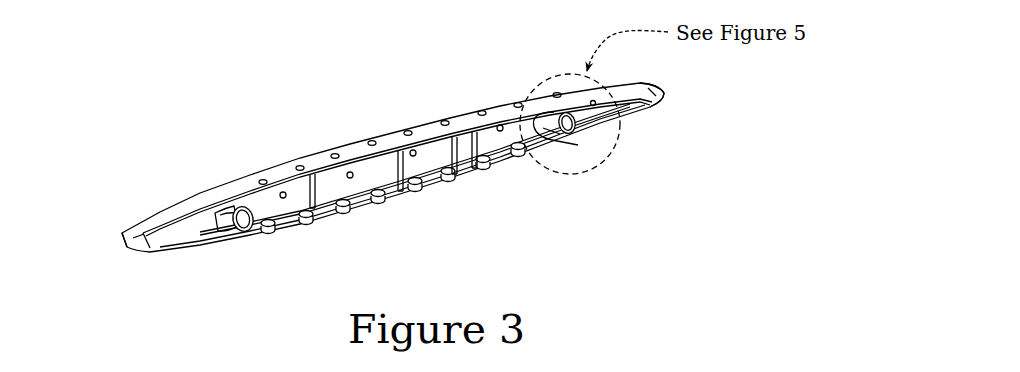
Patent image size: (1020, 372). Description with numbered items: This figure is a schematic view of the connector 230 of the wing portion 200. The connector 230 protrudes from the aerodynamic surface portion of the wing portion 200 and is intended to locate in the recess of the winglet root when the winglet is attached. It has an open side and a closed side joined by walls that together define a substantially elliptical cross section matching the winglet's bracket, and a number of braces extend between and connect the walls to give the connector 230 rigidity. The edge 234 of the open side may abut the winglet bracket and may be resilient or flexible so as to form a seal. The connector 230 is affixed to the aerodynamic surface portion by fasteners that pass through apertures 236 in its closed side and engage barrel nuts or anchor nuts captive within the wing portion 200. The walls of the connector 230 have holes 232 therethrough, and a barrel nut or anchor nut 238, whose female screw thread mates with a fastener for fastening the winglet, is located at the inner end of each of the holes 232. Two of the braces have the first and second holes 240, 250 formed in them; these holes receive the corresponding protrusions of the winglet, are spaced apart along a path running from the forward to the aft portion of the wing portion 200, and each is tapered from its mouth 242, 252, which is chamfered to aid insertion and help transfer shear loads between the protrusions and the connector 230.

The wing portion 200 is at (652, 173).
The connector 230 is at (121, 232).
The holes 232 is at (301, 164).
The edge 234 is at (650, 108).
The apertures 236 is at (282, 191).
The barrel nut or anchor nut 238 is at (344, 172).
The first hole 240 is at (254, 230).
The mouth 242 is at (221, 233).
The second hole 250 is at (580, 141).
The mouth 252 is at (546, 130).